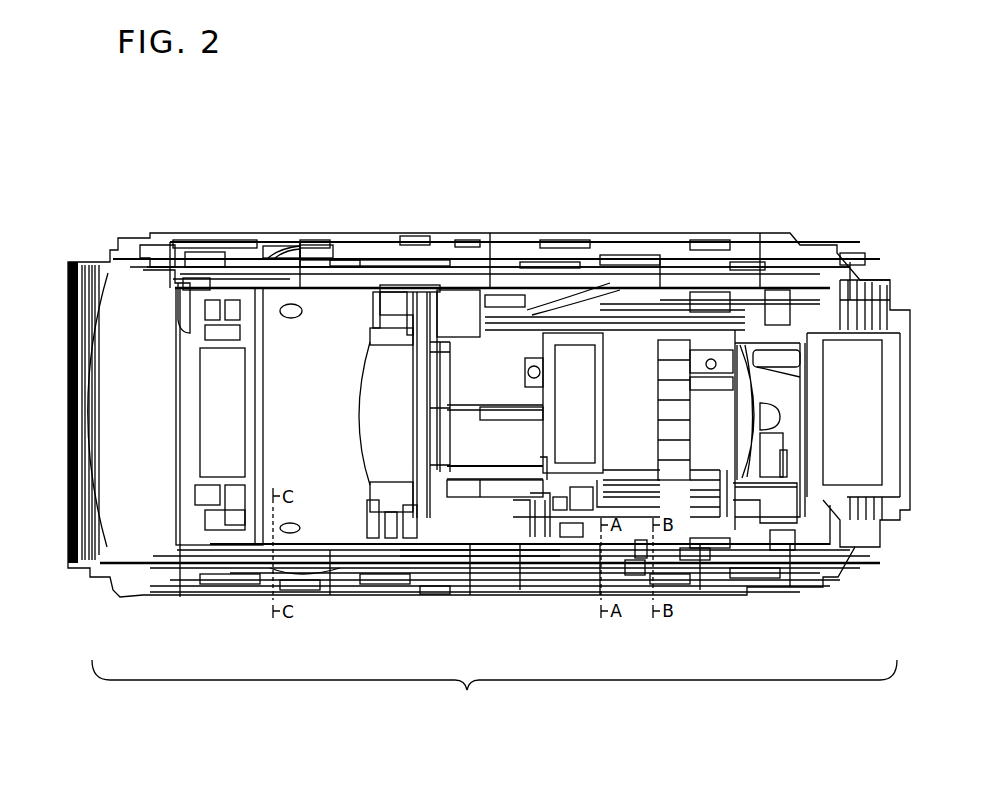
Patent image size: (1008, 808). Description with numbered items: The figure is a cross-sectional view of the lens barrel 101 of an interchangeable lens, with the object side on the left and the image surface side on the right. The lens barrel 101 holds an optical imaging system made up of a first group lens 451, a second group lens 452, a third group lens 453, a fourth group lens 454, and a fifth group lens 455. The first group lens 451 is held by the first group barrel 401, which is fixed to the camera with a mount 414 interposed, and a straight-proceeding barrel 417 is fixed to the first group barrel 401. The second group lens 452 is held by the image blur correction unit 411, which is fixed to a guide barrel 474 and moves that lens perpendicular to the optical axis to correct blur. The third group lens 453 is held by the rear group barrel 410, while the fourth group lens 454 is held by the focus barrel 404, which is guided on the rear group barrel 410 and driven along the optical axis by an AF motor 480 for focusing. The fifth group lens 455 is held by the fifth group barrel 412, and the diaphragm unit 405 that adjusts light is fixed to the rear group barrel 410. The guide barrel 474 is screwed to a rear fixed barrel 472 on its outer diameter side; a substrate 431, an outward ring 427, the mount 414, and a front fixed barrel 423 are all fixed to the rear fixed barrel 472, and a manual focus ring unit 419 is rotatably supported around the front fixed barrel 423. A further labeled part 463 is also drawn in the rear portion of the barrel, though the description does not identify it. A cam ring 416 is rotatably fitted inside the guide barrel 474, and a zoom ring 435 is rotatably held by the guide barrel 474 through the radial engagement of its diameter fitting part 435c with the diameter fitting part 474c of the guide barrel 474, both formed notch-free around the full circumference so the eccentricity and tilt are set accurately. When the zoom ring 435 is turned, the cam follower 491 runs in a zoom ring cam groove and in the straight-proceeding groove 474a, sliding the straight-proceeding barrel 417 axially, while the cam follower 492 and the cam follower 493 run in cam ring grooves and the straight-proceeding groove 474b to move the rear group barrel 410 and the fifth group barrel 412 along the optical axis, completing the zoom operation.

The lens barrel 101 is at (494, 689).
The first group barrel 401 is at (96, 256).
The focus barrel 404 is at (704, 325).
The diaphragm unit 405 is at (421, 330).
The rear group barrel 410 is at (462, 305).
The image blur correction unit 411 is at (205, 265).
The fifth group barrel 412 is at (823, 330).
The mount 414 is at (877, 287).
The cam ring 416 is at (387, 283).
The straight-proceeding barrel 417 is at (160, 265).
The manual focus ring unit 419 is at (627, 265).
The front fixed barrel 423 is at (497, 300).
The outward ring 427 is at (850, 260).
The substrate 431 is at (837, 527).
The zoom ring 435 is at (318, 262).
The diameter fitting part 435c is at (641, 557).
The first group lens 451 is at (110, 337).
The second group lens 452 is at (235, 300).
The third group lens 453 is at (270, 530).
The fourth group lens 454 is at (668, 360).
The fifth group lens 455 is at (840, 360).
The holding member 463 is at (775, 295).
The rear fixed barrel 472 is at (706, 305).
The guide barrel 474 is at (347, 273).
The straight-proceeding groove 474a is at (478, 555).
The straight-proceeding groove 474b is at (703, 552).
The diameter fitting part 474c is at (642, 562).
The AF motor 480 is at (553, 510).
The cam follower 491 is at (587, 515).
The cam follower 492 is at (690, 560).
The cam follower 493 is at (782, 548).